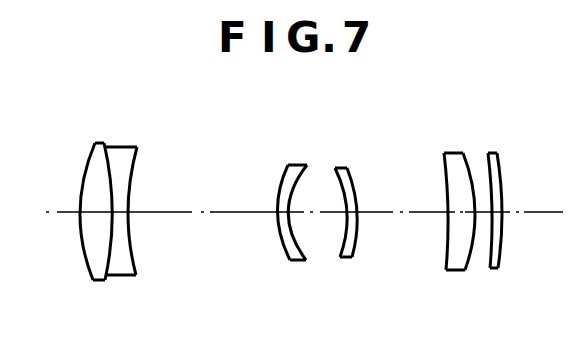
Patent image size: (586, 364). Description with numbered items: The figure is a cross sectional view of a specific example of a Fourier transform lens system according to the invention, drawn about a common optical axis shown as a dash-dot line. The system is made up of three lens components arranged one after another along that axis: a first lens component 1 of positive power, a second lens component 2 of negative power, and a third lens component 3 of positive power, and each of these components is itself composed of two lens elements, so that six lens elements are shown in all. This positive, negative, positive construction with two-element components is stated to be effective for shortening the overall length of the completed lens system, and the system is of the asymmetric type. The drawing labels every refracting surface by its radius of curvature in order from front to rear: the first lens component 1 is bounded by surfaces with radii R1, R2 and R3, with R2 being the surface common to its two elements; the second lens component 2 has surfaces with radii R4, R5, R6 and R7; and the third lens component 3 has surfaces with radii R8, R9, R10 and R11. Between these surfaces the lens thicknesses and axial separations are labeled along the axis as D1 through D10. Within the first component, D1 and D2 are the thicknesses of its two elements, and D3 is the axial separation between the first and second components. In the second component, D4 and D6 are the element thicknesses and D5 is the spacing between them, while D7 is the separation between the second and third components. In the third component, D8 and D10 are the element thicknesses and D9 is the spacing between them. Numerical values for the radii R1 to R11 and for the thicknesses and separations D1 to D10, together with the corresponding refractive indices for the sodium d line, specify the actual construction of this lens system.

The first lens component 1 is at (153, 100).
The second lens component 2 is at (380, 102).
The third lens component 3 is at (555, 102).
The lens thickness D1 is at (95, 210).
The lens thickness D2 is at (118, 210).
The axial separation D3 is at (220, 212).
The lens thickness D4 is at (278, 210).
The axial separation D5 is at (323, 212).
The lens thickness D6 is at (355, 207).
The axial separation D7 is at (392, 212).
The lens thickness D8 is at (461, 212).
The axial separation D9 is at (481, 212).
The lens thickness D10 is at (504, 212).
The radius of curvature R1 is at (90, 263).
The radius of curvature R2 is at (100, 268).
The radius of curvature R3 is at (135, 265).
The radius of curvature R4 is at (288, 250).
The radius of curvature R5 is at (302, 250).
The radius of curvature R6 is at (345, 250).
The radius of curvature R7 is at (348, 248).
The radius of curvature R8 is at (445, 262).
The radius of curvature R9 is at (468, 262).
The radius of curvature R10 is at (490, 262).
The radius of curvature R11 is at (500, 262).